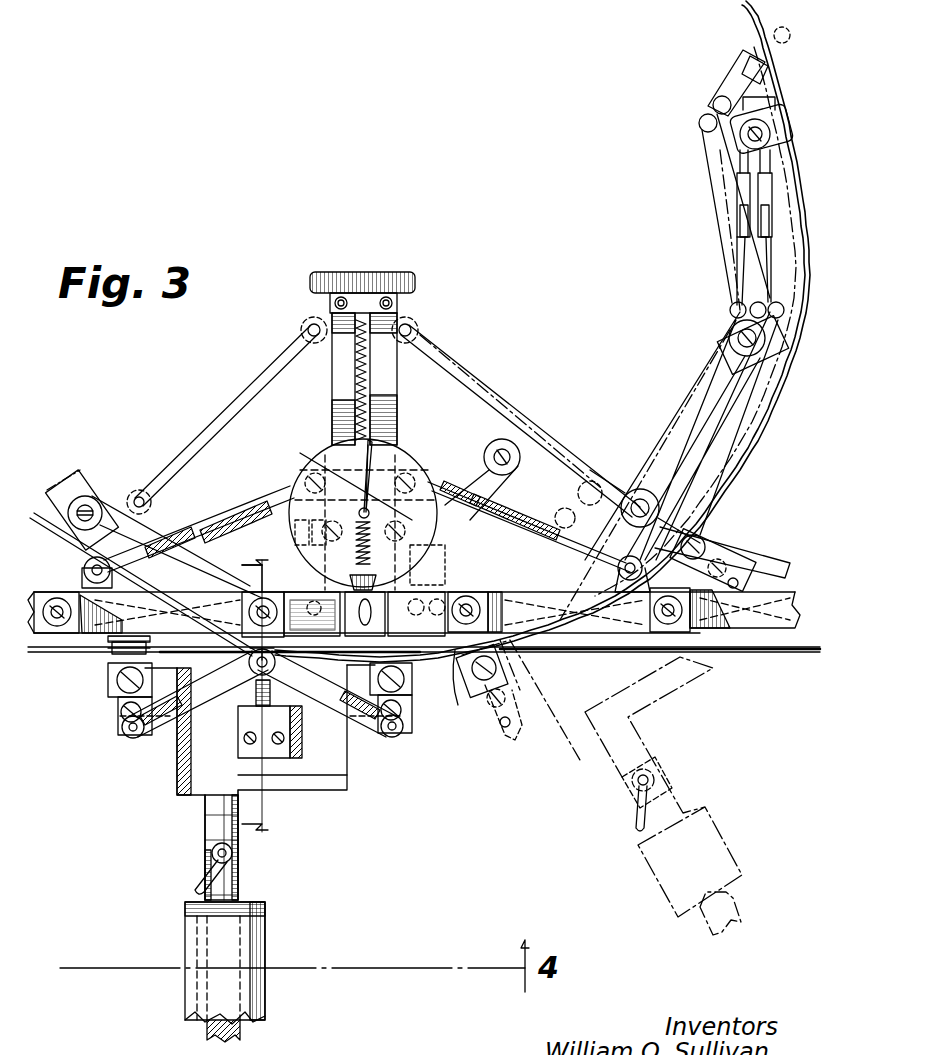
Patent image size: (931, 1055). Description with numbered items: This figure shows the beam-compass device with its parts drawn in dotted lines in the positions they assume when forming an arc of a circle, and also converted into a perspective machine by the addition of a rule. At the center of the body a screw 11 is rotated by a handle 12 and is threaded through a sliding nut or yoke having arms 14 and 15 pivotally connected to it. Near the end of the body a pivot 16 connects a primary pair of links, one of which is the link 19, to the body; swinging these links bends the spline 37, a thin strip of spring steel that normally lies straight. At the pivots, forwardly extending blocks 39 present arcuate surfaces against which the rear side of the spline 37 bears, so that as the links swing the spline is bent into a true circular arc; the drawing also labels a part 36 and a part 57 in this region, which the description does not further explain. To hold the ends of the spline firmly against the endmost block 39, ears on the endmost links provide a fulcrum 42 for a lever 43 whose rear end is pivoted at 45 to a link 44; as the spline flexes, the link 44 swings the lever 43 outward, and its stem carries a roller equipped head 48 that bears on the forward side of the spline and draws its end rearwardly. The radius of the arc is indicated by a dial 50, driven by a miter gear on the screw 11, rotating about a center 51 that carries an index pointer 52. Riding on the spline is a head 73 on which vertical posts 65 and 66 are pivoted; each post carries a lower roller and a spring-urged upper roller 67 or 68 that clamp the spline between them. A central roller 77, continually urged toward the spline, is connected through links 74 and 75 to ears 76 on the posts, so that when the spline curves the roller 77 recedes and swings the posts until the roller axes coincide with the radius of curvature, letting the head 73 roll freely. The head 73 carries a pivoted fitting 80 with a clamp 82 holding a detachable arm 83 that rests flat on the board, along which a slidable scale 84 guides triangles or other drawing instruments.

The screw 11 is at (372, 415).
The handle 12 is at (416, 283).
The arm 14 is at (258, 378).
The arm 15 is at (490, 375).
The pivot 16 is at (263, 600).
The link 19 is at (312, 626).
The pulley 36 is at (592, 486).
The bendable spline 37 is at (785, 652).
The block 39 is at (462, 660).
The fulcrum 42 is at (712, 102).
The lever 43 is at (748, 70).
The link 44 is at (718, 180).
The pivot 45 is at (699, 124).
The roller equipped head 48 is at (788, 30).
The dial 50 is at (405, 470).
The center 51 is at (372, 512).
The index pointer 52 is at (372, 455).
The arcuate guide 57 is at (790, 330).
The vertical post 65 is at (112, 682).
The vertical post 66 is at (412, 680).
The upper roller 67 is at (146, 646).
The upper roller 68 is at (414, 640).
The head 73 is at (347, 790).
The link 74 is at (160, 727).
The link 75 is at (376, 736).
The ear 76 is at (120, 726).
The central roller 77 is at (246, 662).
The fitting 80 is at (206, 818).
The clamp 82 is at (200, 888).
The arm 83 is at (242, 1038).
The scale 84 is at (240, 948).